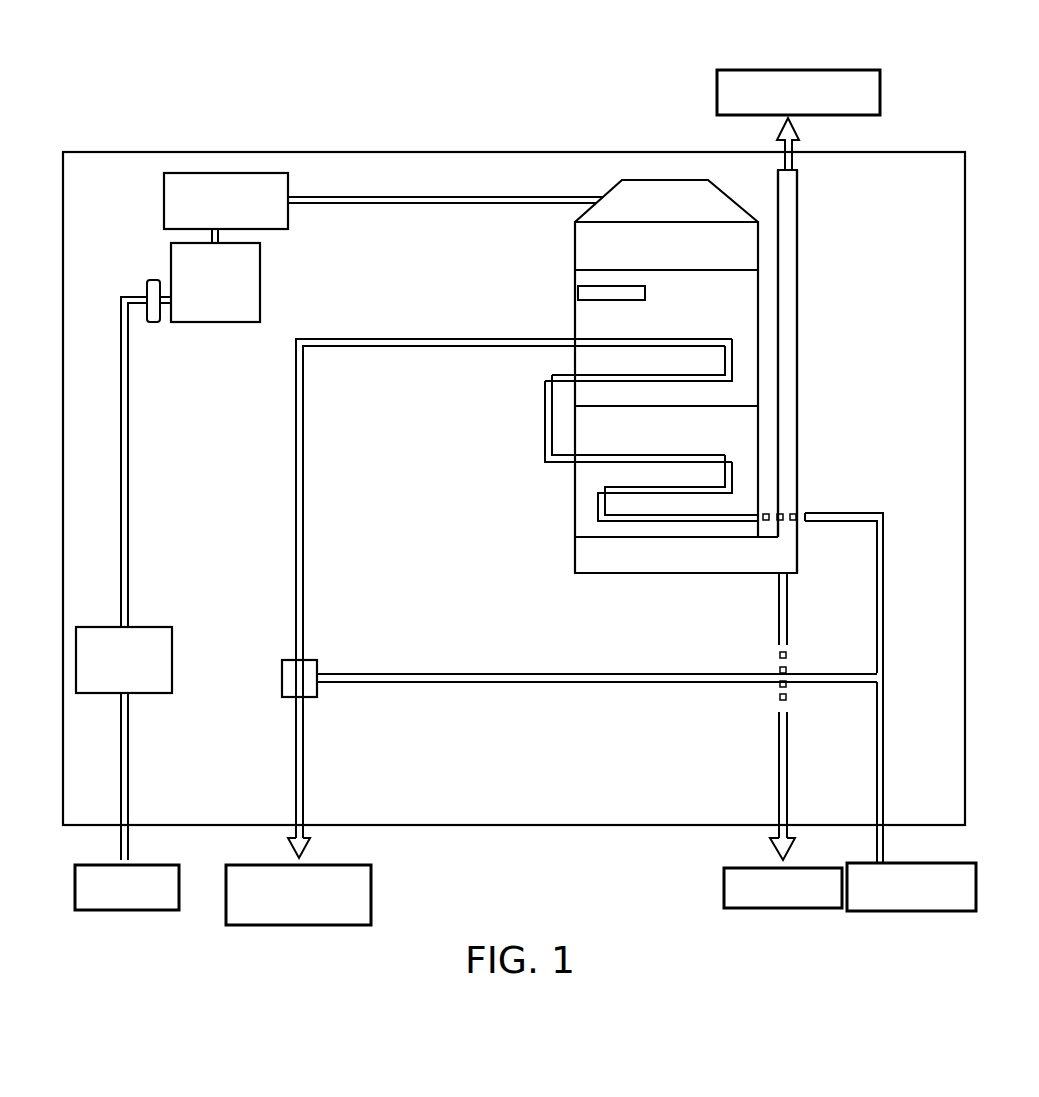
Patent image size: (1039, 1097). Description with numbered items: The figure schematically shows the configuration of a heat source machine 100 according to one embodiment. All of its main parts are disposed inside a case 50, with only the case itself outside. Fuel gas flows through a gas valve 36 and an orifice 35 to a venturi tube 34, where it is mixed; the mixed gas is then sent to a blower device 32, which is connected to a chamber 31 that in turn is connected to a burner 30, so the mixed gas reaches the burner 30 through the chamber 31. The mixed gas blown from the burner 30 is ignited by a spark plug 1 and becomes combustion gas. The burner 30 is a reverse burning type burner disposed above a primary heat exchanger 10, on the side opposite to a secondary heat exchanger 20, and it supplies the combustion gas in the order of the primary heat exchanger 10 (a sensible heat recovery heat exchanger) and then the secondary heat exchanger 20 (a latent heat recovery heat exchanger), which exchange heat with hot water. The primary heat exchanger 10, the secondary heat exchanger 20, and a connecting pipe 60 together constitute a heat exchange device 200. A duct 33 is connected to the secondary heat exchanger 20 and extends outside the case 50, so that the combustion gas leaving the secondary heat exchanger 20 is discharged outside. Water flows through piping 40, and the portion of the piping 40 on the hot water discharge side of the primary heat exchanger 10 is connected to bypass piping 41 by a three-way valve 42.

The heat source machine 100 is at (664, 119).
The case 50 is at (967, 283).
The burner 30 is at (688, 369).
The chamber 31 is at (612, 190).
The duct 33 is at (799, 352).
The spark plug 1 is at (577, 293).
The blower device 32 is at (290, 186).
The venturi tube 34 is at (262, 283).
The orifice 35 is at (153, 323).
The gas valve 36 is at (174, 660).
The piping 40 is at (305, 543).
The heat exchange device 200 is at (600, 430).
The primary heat exchanger 10 is at (573, 363).
The connecting pipe 60 is at (544, 421).
The secondary heat exchanger 20 is at (628, 488).
The bypass piping 41 is at (714, 672).
The three-way valve 42 is at (281, 683).